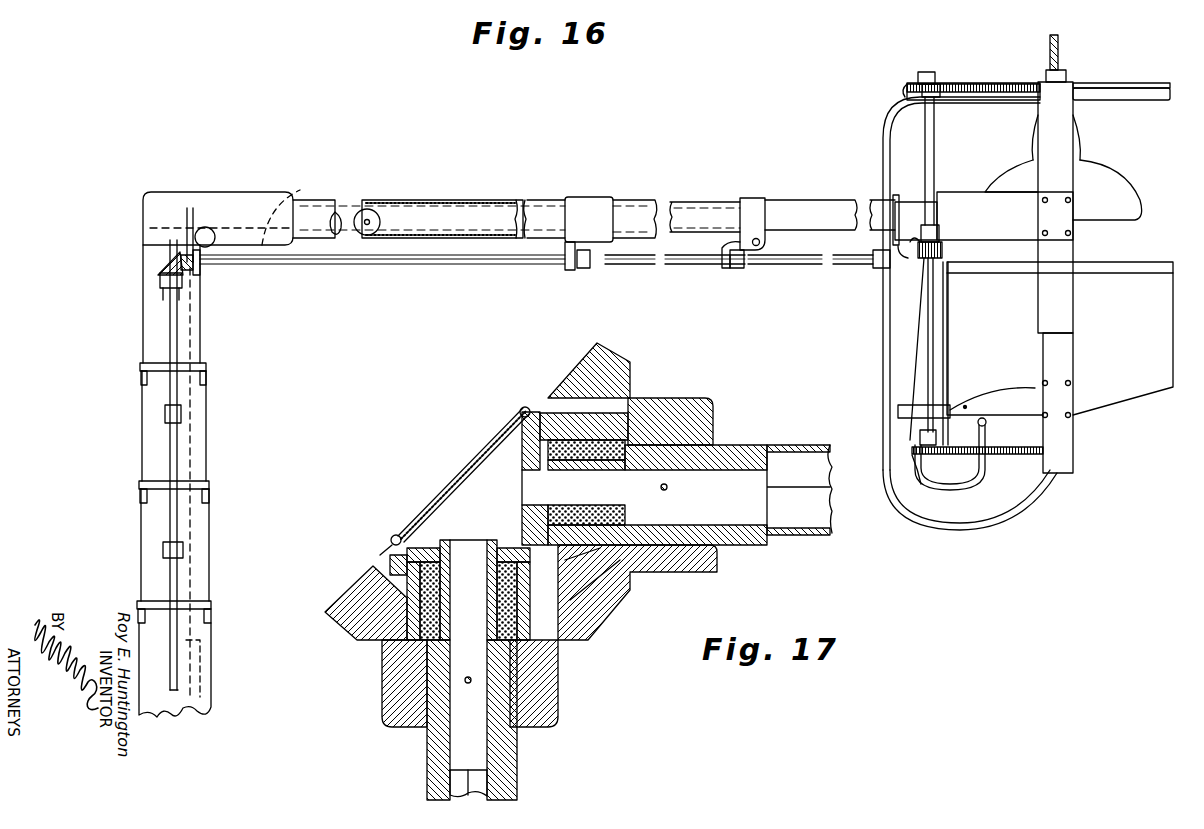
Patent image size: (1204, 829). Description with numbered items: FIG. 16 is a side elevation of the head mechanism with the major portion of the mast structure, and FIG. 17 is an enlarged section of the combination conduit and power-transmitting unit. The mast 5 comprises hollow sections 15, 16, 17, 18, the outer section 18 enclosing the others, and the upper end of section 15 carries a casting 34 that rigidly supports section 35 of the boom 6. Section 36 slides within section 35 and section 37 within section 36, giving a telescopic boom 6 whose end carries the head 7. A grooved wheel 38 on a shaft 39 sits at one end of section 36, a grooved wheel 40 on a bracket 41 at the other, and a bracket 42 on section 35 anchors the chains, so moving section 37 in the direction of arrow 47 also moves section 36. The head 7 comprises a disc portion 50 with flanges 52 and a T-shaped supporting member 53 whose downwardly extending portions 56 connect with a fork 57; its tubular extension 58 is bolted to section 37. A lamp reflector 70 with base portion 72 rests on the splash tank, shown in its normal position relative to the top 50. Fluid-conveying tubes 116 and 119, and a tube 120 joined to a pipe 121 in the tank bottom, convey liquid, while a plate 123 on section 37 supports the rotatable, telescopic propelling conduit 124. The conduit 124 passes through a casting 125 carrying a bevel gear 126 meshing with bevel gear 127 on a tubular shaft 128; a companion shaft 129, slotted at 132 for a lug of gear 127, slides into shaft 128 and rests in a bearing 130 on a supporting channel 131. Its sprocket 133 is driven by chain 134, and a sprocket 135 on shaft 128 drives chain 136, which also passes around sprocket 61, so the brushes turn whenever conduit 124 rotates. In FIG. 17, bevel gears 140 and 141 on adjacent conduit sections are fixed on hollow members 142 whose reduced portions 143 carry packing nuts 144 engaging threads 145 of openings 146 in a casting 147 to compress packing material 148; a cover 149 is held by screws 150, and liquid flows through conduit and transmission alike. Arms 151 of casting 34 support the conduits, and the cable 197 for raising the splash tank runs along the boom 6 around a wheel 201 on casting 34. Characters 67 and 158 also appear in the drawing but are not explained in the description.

In FIG. 16, the mast 5 is at (141, 450).
In FIG. 16, the boom 6 is at (545, 193).
In FIG. 16, the head 7 is at (1165, 408).
In FIG. 16, the mast section 15 is at (143, 317).
In FIG. 16, the mast section 16 is at (207, 425).
In FIG. 16, the mast section 17 is at (142, 540).
In FIG. 16, the outer mast section 18 is at (207, 650).
In FIG. 16, the casting 34 is at (240, 192).
In FIG. 16, the boom section 35 is at (452, 200).
In FIG. 16, the boom section 36 is at (645, 205).
In FIG. 16, the boom section 37 is at (810, 205).
In FIG. 16, the grooved wheel 38 is at (381, 222).
In FIG. 16, the shaft 39 is at (331, 222).
In FIG. 16, the grooved wheel 40 is at (760, 243).
In FIG. 16, the bracket 41 is at (752, 205).
In FIG. 16, the bracket 42 is at (578, 240).
In FIG. 16, the arrow 47 is at (868, 285).
In FIG. 16, the disc portion 50 is at (1158, 83).
In FIG. 16, the flanges 52 is at (1125, 88).
In FIG. 16, the T-shaped supporting member 53 is at (1015, 82).
In FIG. 16, the downwardly extending portions 56 is at (1065, 435).
In FIG. 16, the fork 57 is at (1015, 220).
In FIG. 16, the tubular extension 58 is at (912, 212).
In FIG. 16, the sprocket 61 is at (1066, 74).
In FIG. 16, the threaded shaft 67 is at (1060, 18).
In FIG. 16, the lamp reflector 70 is at (1110, 180).
In FIG. 16, the base portion 72 is at (1082, 135).
In FIG. 16, the fluid-conveying tube 116 is at (883, 108).
In FIG. 16, the liquid-conveying tube 119 is at (883, 345).
In FIG. 16, the tube 120 is at (985, 477).
In FIG. 16, the pipe 121 is at (988, 424).
In FIG. 16, the plate 123 is at (893, 216).
In FIG. 16, the propelling conduit 124 is at (182, 570).
In FIG. 17, the propelling conduit 124 is at (832, 500).
In FIG. 16, the casting 125 is at (878, 252).
In FIG. 16, the bevel gear 126 is at (916, 262).
In FIG. 16, the bevel gear 127 is at (940, 247).
In FIG. 16, the tubular shaft 128 is at (935, 146).
In FIG. 16, the companion shaft 129 is at (922, 360).
In FIG. 16, the bearing 130 is at (920, 440).
In FIG. 16, the supporting channel 131 is at (950, 336).
In FIG. 16, the slot 132 is at (935, 380).
In FIG. 16, the sprocket 133 is at (932, 484).
In FIG. 16, the chain 134 is at (1020, 455).
In FIG. 16, the sprocket 135 is at (905, 94).
In FIG. 16, the chain 136 is at (975, 84).
In FIG. 16, the bevel gear 140 is at (200, 263).
In FIG. 17, the bevel gear 140 is at (670, 398).
In FIG. 16, the bevel gear 141 is at (160, 284).
In FIG. 17, the bevel gear 141 is at (560, 685).
In FIG. 17, the hollow members 142 is at (735, 446).
In FIG. 17, the reduced portions 143 is at (540, 440).
In FIG. 17, the packing nuts 144 is at (472, 540).
In FIG. 17, the threads 145 is at (395, 563).
In FIG. 17, the openings 146 is at (598, 456).
In FIG. 17, the casting 147 is at (630, 582).
In FIG. 17, the packing material 148 is at (585, 515).
In FIG. 16, the cover 149 is at (165, 265).
In FIG. 17, the cover 149 is at (492, 452).
In FIG. 17, the bolts or screws 150 is at (520, 412).
In FIG. 16, the arms 151 is at (190, 208).
In FIG. 16, the pipe 158 is at (185, 678).
In FIG. 17, the pipe 158 is at (450, 786).
In FIG. 16, the cable 197 is at (300, 160).
In FIG. 16, the wheel 201 is at (208, 228).